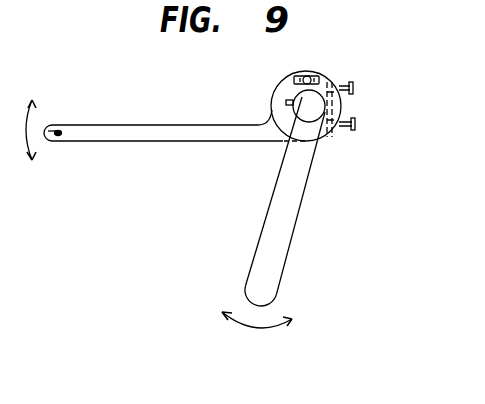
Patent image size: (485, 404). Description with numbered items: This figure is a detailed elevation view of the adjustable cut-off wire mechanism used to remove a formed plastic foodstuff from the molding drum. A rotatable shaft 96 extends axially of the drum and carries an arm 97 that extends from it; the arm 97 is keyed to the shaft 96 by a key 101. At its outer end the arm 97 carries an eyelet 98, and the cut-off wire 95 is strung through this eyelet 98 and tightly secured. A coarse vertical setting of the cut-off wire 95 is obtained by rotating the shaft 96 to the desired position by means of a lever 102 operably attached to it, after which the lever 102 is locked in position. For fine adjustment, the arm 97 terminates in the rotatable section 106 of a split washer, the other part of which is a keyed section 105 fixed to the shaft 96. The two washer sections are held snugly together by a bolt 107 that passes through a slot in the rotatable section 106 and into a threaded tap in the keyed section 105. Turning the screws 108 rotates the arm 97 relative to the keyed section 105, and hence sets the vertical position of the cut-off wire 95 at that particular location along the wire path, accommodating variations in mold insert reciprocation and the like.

The cut-off wire 95 is at (58, 132).
The arm 97 is at (213, 142).
The eyelet 98 is at (61, 135).
The key 101 is at (288, 100).
The rotatable shaft 96 is at (300, 97).
The keyed section 105 is at (305, 141).
The lever 102 is at (288, 216).
The rotatable section 106 is at (341, 113).
The bolt 107 is at (316, 74).
The screws 108 is at (358, 74).